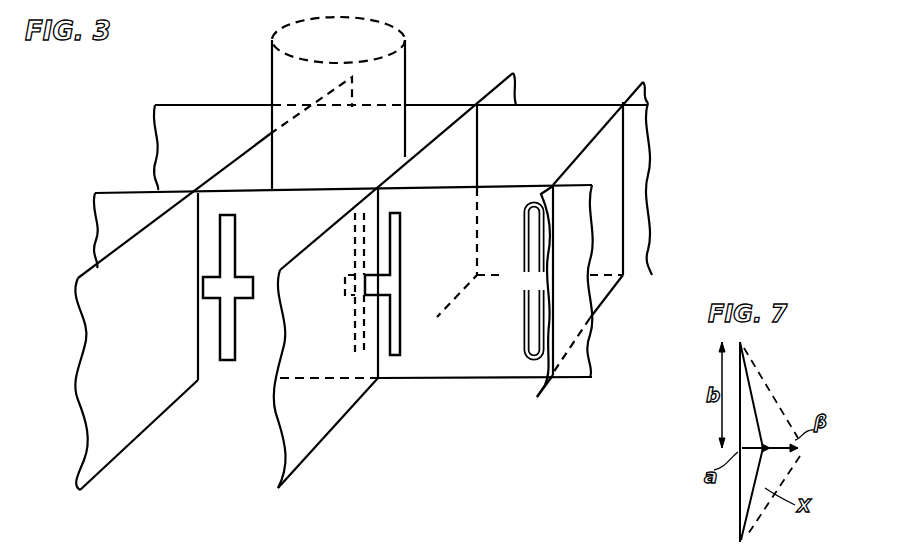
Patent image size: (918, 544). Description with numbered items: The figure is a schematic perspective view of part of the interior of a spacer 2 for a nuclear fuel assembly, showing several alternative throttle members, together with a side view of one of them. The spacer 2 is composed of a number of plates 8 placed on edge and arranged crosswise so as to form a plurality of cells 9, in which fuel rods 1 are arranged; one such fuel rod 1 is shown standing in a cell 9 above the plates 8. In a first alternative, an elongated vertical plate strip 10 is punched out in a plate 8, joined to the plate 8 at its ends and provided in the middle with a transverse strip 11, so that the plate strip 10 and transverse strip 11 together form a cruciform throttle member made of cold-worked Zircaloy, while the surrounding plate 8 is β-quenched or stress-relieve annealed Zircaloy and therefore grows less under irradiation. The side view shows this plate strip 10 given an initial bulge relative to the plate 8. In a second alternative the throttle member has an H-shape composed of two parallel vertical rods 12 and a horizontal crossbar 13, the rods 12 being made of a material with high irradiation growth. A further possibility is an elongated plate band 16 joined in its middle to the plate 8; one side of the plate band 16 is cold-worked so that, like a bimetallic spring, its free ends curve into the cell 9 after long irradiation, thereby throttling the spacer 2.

In FIG. 3, the fuel rod 1 is at (407, 70).
In FIG. 3, the spacer 2 is at (615, 297).
In FIG. 3, the plate 8 is at (562, 102).
In FIG. 7, the plate 8 is at (738, 498).
In FIG. 3, the cell 9 is at (575, 128).
In FIG. 3, the plate strip 10 is at (230, 345).
In FIG. 7, the plate strip 10 is at (755, 398).
In FIG. 3, the transverse strip 11 is at (240, 285).
In FIG. 3, the vertical rod 12 is at (357, 258).
In FIG. 3, the horizontal crossbar 13 is at (385, 285).
In FIG. 3, the plate band 16 is at (530, 328).